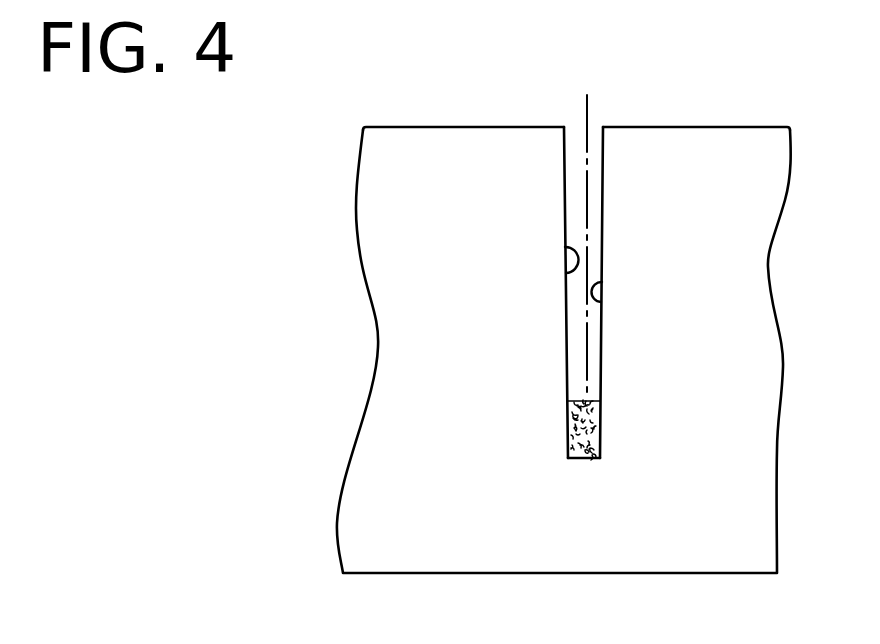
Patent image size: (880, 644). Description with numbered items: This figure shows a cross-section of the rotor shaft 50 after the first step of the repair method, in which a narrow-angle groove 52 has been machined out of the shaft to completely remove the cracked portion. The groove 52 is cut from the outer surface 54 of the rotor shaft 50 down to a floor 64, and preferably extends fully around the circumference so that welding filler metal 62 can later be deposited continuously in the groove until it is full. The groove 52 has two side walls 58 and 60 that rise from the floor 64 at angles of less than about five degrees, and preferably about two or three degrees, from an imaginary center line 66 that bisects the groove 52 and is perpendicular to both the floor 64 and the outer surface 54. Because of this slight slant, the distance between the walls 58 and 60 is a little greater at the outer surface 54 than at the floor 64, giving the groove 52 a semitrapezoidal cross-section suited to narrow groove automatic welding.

The rotor shaft 50 is at (447, 142).
The groove 52 is at (592, 208).
The outer surface 54 is at (522, 127).
The side wall 58 is at (565, 246).
The side wall 60 is at (590, 290).
The filler material 62 is at (595, 409).
The floor 64 is at (600, 459).
The center line 66 is at (589, 113).